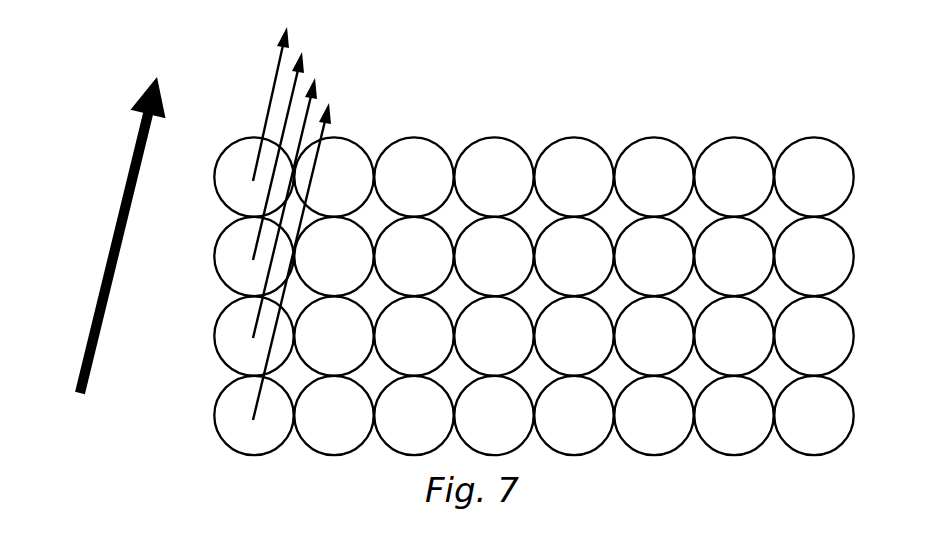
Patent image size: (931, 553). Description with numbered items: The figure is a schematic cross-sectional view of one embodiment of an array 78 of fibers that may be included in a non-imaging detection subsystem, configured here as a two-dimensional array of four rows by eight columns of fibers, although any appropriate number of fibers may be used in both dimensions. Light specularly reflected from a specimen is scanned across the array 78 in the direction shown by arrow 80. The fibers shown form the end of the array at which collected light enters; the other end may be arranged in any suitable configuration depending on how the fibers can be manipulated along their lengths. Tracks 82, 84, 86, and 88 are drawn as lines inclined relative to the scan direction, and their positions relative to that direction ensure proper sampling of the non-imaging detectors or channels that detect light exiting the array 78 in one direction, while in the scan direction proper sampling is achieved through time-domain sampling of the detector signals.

The array of fibers 78 is at (686, 66).
The arrow 80 is at (95, 187).
The track 82 is at (281, 55).
The track 84 is at (290, 102).
The track 86 is at (300, 135).
The track 88 is at (325, 125).